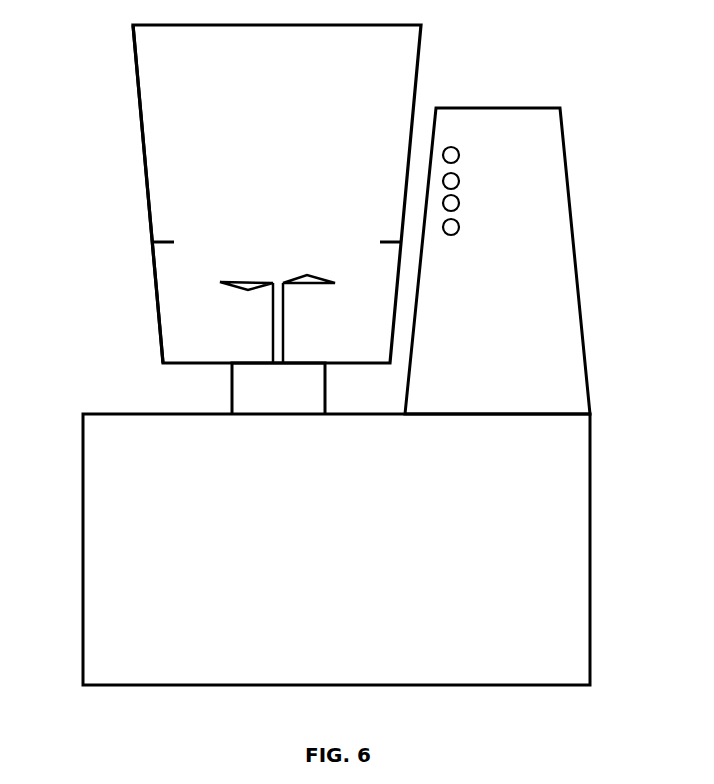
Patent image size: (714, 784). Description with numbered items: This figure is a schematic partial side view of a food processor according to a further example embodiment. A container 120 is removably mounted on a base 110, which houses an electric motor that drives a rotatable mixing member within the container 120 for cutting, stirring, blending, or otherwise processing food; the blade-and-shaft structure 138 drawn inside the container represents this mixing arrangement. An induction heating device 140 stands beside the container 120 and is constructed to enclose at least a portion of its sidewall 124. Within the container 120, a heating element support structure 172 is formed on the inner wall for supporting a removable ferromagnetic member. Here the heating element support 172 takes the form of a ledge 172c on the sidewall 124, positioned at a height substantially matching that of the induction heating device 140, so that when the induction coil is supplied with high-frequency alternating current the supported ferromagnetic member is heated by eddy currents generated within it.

The base 110 is at (565, 539).
The container 120 is at (152, 82).
The sidewall 124 is at (147, 165).
The blade assembly 138 is at (275, 302).
The induction heating device 140 is at (459, 181).
The heating element support structure 172 is at (393, 238).
The ledge 172c is at (170, 238).